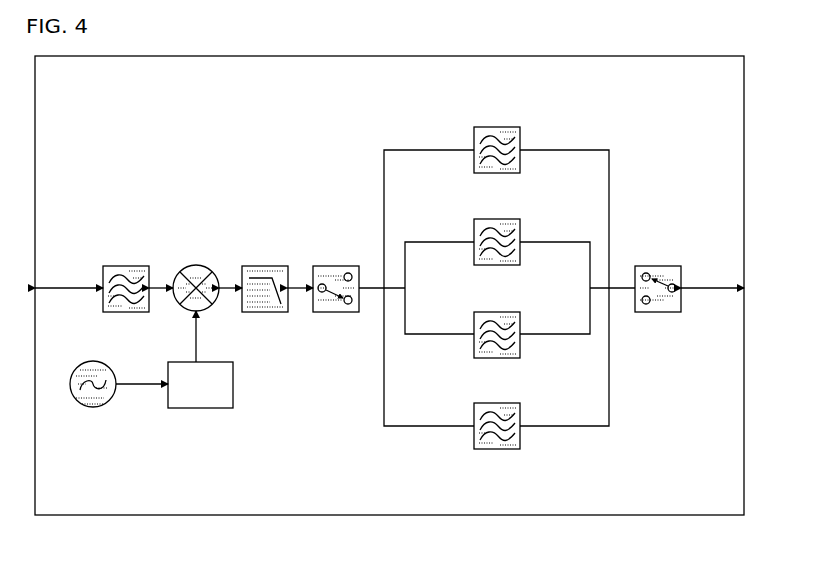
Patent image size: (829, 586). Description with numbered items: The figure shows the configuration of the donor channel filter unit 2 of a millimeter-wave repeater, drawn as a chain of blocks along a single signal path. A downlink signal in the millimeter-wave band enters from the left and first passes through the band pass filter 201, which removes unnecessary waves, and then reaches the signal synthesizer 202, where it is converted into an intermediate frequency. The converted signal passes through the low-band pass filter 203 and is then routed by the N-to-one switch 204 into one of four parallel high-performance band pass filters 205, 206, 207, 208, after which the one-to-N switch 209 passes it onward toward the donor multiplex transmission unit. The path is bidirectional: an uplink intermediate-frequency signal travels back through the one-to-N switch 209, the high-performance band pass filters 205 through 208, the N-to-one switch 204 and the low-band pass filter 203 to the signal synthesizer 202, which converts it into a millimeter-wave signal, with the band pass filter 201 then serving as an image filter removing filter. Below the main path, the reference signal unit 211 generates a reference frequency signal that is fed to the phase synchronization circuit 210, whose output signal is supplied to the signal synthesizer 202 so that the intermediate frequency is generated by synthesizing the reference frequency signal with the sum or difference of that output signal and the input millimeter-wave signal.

The donor channel filter unit 2 is at (421, 516).
The band pass filter 201 is at (128, 266).
The signal synthesizer 202 is at (197, 265).
The low-band pass filter 203 is at (262, 266).
The N:1 switch 204 is at (336, 266).
The high-performance band pass filter 205 is at (498, 127).
The high-performance band pass filter 206 is at (518, 219).
The high-performance band pass filter 207 is at (518, 312).
The high-performance band pass filter 208 is at (497, 449).
The 1:N switch 209 is at (660, 266).
The phase synchronization circuit 210 is at (200, 408).
The reference signal unit 211 is at (93, 407).